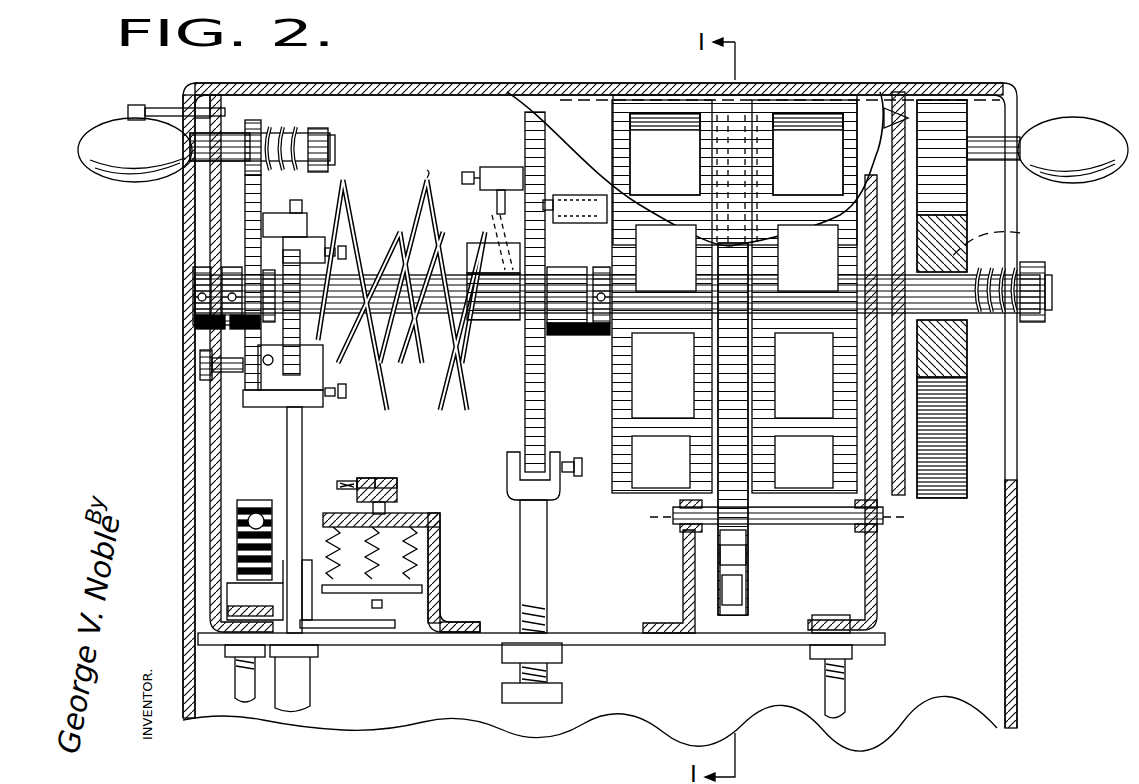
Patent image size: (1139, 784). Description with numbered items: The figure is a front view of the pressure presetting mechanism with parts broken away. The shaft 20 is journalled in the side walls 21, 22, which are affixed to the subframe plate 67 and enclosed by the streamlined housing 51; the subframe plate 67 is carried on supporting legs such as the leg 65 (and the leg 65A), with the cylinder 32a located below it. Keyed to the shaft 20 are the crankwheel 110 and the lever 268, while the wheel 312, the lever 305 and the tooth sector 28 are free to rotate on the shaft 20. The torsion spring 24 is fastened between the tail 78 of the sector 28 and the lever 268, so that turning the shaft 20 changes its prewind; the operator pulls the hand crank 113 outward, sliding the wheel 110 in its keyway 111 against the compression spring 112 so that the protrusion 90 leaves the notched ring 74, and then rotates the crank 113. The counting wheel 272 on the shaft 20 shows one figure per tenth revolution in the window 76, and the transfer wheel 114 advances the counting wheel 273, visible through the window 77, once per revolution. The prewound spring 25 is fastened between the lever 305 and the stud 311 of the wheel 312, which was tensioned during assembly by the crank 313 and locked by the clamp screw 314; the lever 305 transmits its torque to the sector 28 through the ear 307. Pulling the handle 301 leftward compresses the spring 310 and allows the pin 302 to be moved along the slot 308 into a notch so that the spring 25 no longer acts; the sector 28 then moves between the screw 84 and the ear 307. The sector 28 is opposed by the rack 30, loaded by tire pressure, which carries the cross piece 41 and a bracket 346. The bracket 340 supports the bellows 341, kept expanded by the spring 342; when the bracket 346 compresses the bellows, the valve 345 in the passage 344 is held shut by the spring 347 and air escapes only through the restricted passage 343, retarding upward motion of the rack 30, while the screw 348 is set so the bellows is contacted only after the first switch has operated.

The shaft 20 is at (373, 276).
The side wall 21 is at (220, 482).
The side wall 22 is at (878, 565).
The torsion spring 24 is at (420, 363).
The torsion spring 25 is at (428, 178).
The tooth sector 28 is at (246, 338).
The rack 30 is at (302, 440).
The cylinder 32a is at (310, 685).
The cross piece 41 is at (280, 556).
The housing 51 is at (1015, 575).
The supporting leg 65 is at (845, 690).
The mounting bolt 65A is at (240, 680).
The subframe plate 67 is at (628, 638).
The notched ring 74 is at (892, 91).
The window 76 is at (803, 115).
The window 77 is at (663, 112).
The tail 78 is at (306, 241).
The screw 84 is at (200, 368).
The protrusion 90 is at (907, 114).
The crankwheel 110 is at (960, 213).
The keyway 111 is at (1010, 236).
The compression spring 112 is at (998, 320).
The hand crank 113 is at (1086, 98).
The transfer wheel 114 is at (748, 565).
The lever 268 is at (478, 242).
The counting wheel 272 is at (845, 505).
The counting wheel 273 is at (628, 498).
The handle 301 is at (142, 180).
The pin 302 is at (167, 110).
The lever 305 is at (247, 404).
The ear 307 is at (280, 220).
The slot 308 is at (236, 124).
The spring 310 is at (306, 126).
The stud 311 is at (495, 167).
The wheel 312 is at (546, 380).
The crank 313 is at (578, 200).
The clamp screw 314 is at (577, 476).
The bracket 340 is at (442, 590).
The bellows 341 is at (425, 544).
The spring 342 is at (386, 521).
The restricted passage 343 is at (396, 490).
The passage 344 is at (366, 478).
The valve 345 is at (382, 478).
The bracket 346 is at (340, 630).
The spring 347 is at (342, 489).
The screw 348 is at (372, 604).